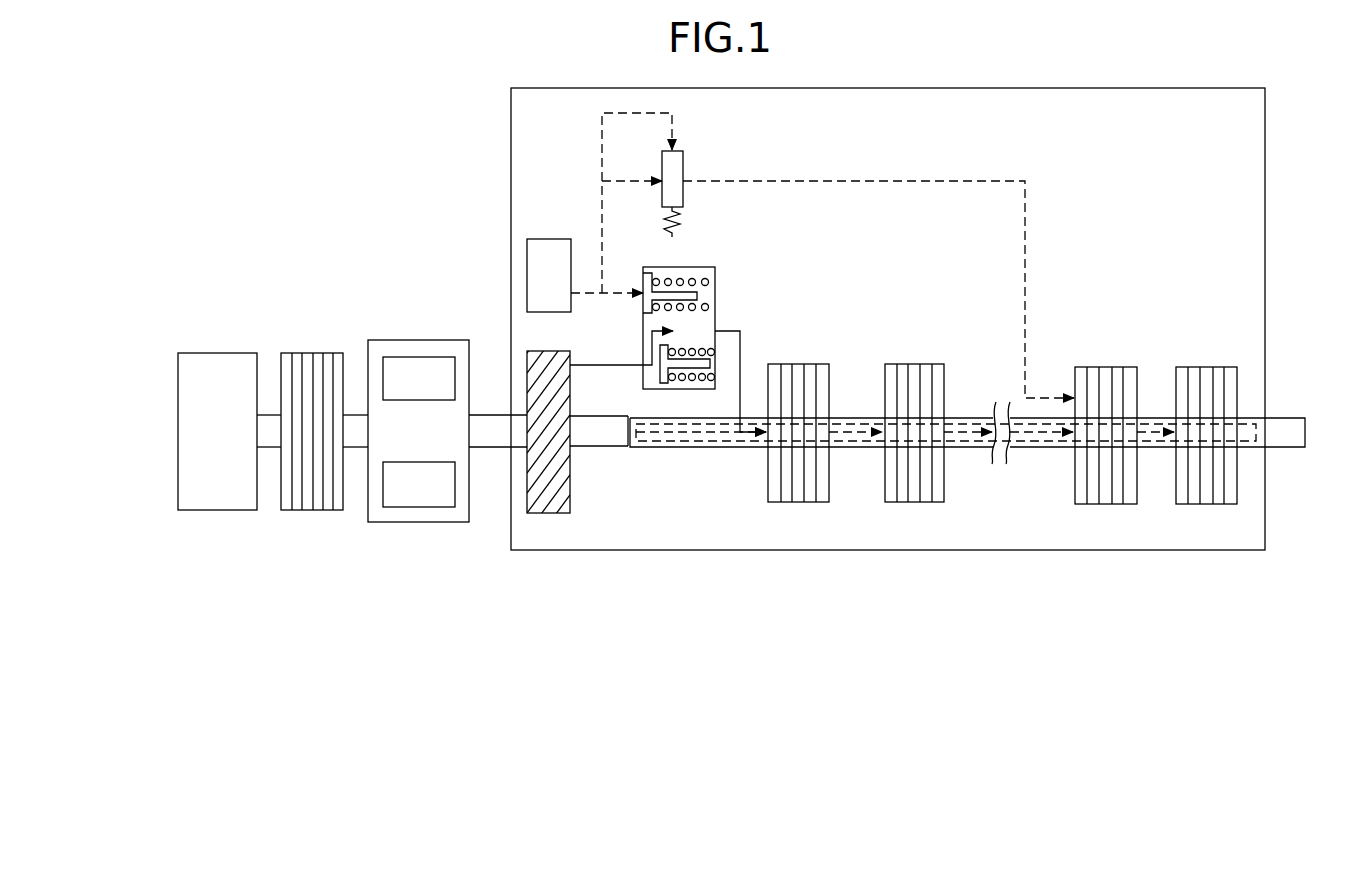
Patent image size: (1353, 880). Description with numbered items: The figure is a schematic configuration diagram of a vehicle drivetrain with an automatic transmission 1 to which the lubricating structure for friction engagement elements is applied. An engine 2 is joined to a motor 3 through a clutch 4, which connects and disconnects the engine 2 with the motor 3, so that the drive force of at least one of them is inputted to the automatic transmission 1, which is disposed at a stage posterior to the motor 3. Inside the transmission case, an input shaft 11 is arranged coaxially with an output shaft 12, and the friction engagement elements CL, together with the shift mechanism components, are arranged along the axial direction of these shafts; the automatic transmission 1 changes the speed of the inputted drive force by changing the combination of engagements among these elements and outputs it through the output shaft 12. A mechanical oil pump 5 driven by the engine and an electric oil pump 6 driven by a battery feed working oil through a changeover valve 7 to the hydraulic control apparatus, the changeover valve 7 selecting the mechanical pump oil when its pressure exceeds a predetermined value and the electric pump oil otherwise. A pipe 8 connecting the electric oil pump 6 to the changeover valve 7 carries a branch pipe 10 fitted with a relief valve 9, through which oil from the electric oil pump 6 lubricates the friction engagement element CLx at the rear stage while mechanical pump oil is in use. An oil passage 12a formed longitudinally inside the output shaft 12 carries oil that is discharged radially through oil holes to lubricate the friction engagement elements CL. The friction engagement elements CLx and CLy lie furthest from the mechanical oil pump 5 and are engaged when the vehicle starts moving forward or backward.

The automatic transmission 1 is at (483, 117).
The engine 2 is at (218, 353).
The motor 3 is at (417, 340).
The clutch 4 is at (300, 353).
The mechanical oil pump 5 is at (548, 514).
The electric oil pump 6 is at (539, 239).
The changeover valve 7 is at (715, 290).
The pipe 8 is at (586, 294).
The relief valve 9 is at (683, 162).
The branch pipe 10 is at (788, 182).
The input shaft 11 is at (510, 432).
The output shaft 12 is at (1290, 440).
The oil passage 12a is at (670, 437).
The friction engagement elements CL is at (797, 502).
The friction engagement element CLx is at (1105, 504).
The friction engagement element CLy is at (1205, 504).